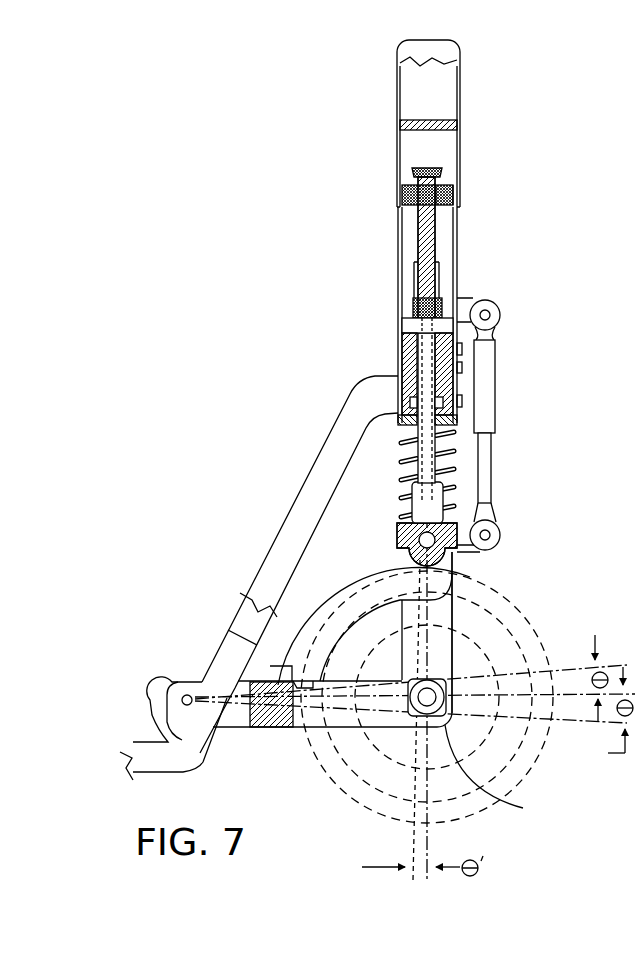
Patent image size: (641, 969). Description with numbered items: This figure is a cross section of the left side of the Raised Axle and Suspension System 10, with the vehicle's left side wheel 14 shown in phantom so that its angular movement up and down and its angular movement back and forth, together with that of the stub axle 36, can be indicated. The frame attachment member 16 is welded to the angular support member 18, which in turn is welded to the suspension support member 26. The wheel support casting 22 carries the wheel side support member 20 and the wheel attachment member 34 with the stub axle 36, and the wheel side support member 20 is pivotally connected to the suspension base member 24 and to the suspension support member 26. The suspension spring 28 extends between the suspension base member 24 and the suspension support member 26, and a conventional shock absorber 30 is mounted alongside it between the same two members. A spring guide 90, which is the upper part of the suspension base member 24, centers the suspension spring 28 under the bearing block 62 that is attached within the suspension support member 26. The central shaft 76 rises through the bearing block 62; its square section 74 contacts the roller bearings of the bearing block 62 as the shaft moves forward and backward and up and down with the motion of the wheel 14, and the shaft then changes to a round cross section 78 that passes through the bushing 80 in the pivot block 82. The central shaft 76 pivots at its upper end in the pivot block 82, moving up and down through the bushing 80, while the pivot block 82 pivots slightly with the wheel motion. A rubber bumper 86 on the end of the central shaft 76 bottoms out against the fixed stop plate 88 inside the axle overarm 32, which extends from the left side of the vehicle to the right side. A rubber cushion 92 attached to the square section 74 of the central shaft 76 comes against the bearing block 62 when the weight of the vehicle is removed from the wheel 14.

The Raised Axle and Suspension System 10 is at (284, 318).
The wheel 14 is at (383, 785).
The frame attachment member 16 is at (165, 742).
The angular support member 18 is at (315, 490).
The wheel side support member 20 is at (323, 608).
The wheel support casting 22 is at (267, 720).
The suspension base member 24 is at (455, 560).
The suspension support member 26 is at (400, 332).
The suspension spring 28 is at (453, 485).
The shock absorber 30 is at (487, 385).
The axle overarm 32 is at (400, 49).
The wheel attachment member 34 is at (440, 650).
The stub axle 36 is at (483, 773).
The bearing block 62 is at (400, 363).
The square section 74 is at (400, 263).
The central shaft 76 is at (440, 262).
The round cross section 78 is at (418, 228).
The bushing 80 is at (438, 200).
The pivot block 82 is at (457, 187).
The rubber bumper 86 is at (437, 170).
The fixed stop plate 88 is at (433, 120).
The spring guide 90 is at (412, 488).
The rubber cushion 92 is at (400, 310).